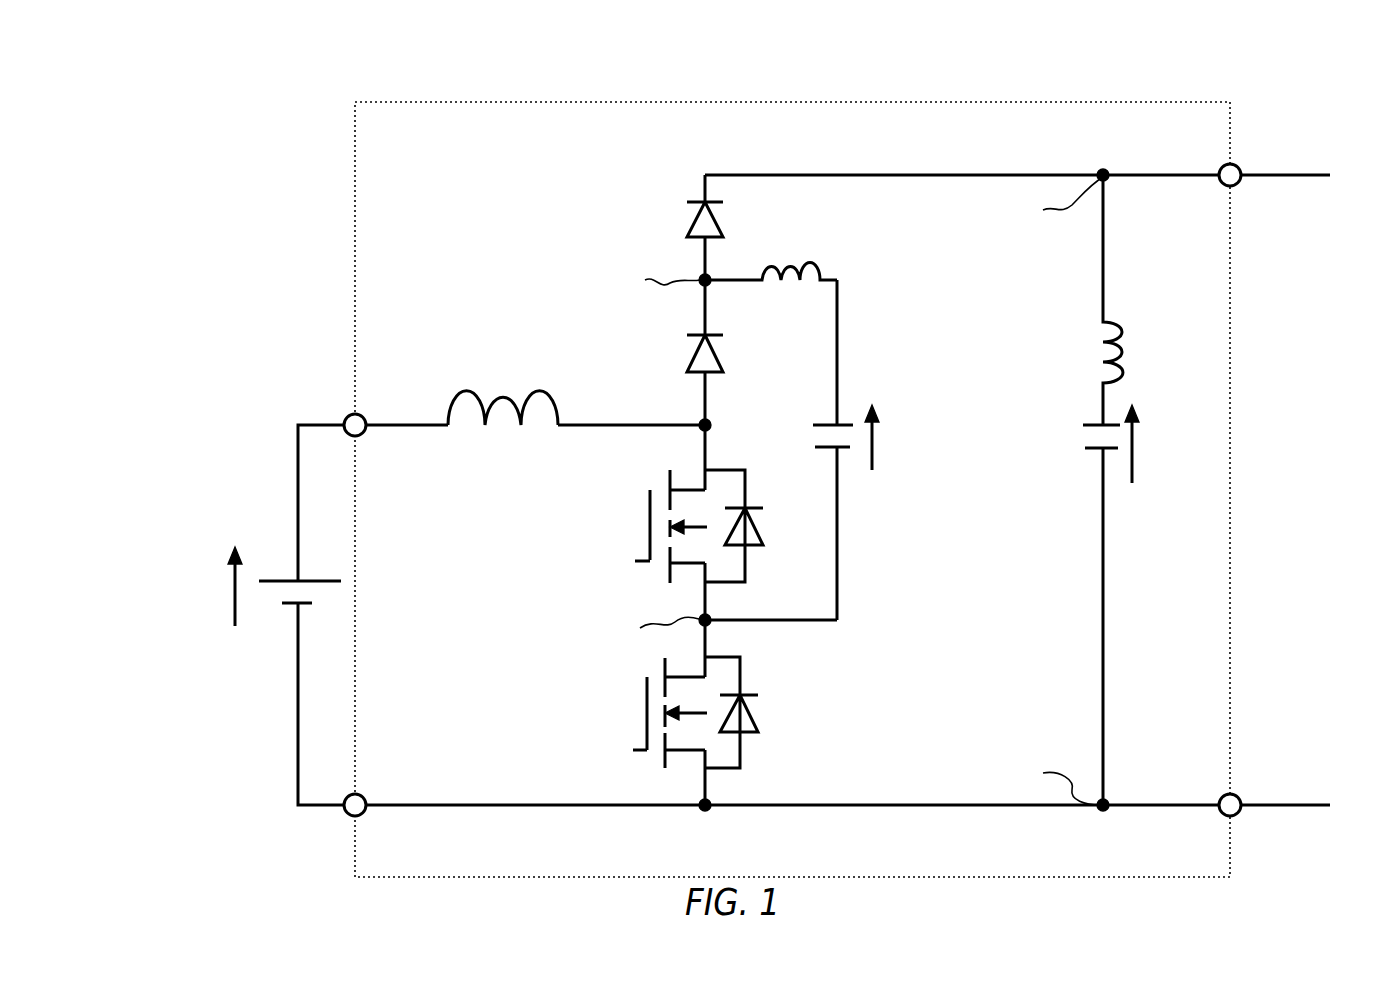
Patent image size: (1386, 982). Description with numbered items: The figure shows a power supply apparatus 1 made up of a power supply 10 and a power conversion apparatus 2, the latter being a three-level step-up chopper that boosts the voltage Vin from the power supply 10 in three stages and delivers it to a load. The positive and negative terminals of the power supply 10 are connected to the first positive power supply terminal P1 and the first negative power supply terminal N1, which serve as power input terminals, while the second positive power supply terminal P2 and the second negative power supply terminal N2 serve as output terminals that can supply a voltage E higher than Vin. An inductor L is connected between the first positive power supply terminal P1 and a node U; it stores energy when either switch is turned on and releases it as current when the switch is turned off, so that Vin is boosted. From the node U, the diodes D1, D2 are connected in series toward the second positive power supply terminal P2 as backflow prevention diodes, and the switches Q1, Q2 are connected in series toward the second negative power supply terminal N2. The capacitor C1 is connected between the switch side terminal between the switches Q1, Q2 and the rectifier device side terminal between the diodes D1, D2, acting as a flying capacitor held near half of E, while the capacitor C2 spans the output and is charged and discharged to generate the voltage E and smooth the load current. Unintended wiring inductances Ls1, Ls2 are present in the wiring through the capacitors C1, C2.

The power supply apparatus 1 is at (734, 438).
The power conversion apparatus 2 is at (873, 101).
The power supply 10 is at (263, 581).
The inductor L is at (470, 388).
The diode D1 is at (688, 360).
The diode D2 is at (700, 203).
The switch Q1 is at (648, 517).
The switch Q2 is at (646, 722).
The capacitor C1 is at (847, 424).
The capacitor C2 is at (1058, 615).
The wiring inductance Ls1 is at (806, 271).
The wiring inductance Ls2 is at (1102, 327).
The first positive power supply terminal P1 is at (378, 400).
The first negative power supply terminal N1 is at (383, 830).
The second positive power supply terminal P2 is at (1259, 150).
The second negative power supply terminal N2 is at (1259, 831).
The node U is at (723, 434).